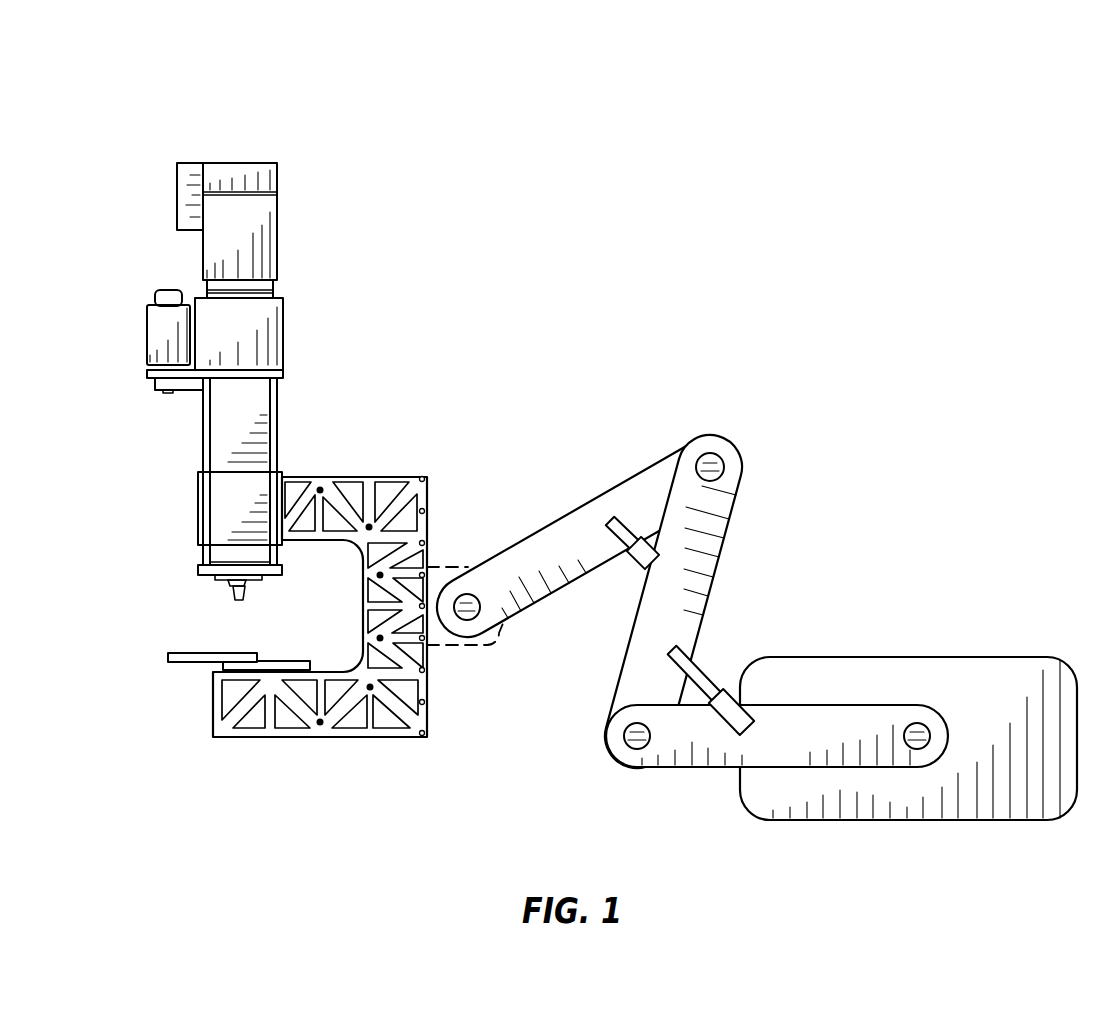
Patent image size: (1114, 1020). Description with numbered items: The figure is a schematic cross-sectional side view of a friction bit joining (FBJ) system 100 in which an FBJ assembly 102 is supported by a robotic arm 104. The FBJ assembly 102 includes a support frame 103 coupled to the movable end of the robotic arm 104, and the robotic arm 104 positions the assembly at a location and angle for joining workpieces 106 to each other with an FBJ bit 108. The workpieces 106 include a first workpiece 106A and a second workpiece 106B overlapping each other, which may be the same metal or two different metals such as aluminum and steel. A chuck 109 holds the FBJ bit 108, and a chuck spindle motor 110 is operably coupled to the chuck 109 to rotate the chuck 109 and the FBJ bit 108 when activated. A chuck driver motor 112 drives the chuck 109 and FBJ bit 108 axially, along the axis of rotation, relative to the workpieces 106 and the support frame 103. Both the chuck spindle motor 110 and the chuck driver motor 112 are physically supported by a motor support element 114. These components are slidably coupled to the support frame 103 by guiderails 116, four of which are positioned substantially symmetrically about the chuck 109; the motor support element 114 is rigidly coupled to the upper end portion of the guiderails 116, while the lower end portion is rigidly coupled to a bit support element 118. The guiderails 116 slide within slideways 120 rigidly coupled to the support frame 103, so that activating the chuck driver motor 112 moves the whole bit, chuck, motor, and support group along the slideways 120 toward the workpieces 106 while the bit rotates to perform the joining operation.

The friction bit joining system 100 is at (210, 100).
The FBJ assembly 102 is at (426, 297).
The support frame 103 is at (395, 740).
The robotic arm 104 is at (744, 567).
The workpieces 106 is at (168, 670).
The first workpiece 106A is at (195, 664).
The second workpiece 106B is at (306, 662).
The FBJ bit 108 is at (244, 594).
The chuck 109 is at (232, 586).
The chuck spindle motor 110 is at (294, 242).
The chuck driver motor 112 is at (140, 331).
The motor support element 114 is at (283, 374).
The guiderails 116 is at (279, 423).
The bit support element 118 is at (204, 576).
The slideways 120 is at (203, 512).